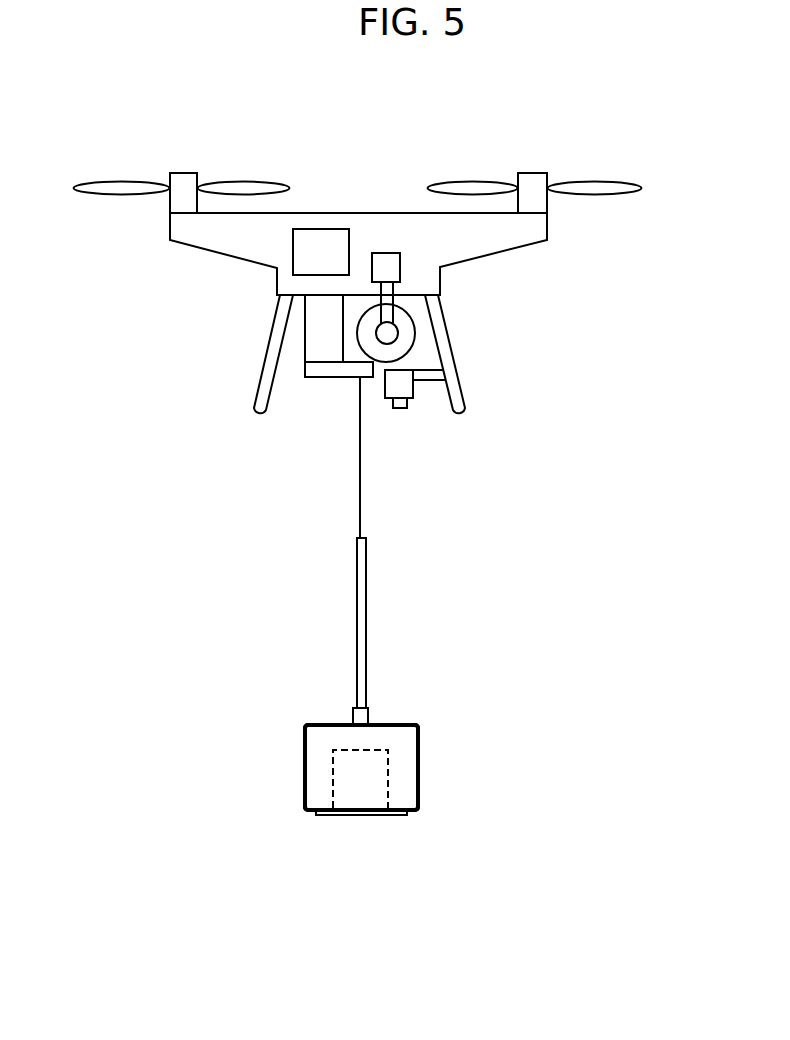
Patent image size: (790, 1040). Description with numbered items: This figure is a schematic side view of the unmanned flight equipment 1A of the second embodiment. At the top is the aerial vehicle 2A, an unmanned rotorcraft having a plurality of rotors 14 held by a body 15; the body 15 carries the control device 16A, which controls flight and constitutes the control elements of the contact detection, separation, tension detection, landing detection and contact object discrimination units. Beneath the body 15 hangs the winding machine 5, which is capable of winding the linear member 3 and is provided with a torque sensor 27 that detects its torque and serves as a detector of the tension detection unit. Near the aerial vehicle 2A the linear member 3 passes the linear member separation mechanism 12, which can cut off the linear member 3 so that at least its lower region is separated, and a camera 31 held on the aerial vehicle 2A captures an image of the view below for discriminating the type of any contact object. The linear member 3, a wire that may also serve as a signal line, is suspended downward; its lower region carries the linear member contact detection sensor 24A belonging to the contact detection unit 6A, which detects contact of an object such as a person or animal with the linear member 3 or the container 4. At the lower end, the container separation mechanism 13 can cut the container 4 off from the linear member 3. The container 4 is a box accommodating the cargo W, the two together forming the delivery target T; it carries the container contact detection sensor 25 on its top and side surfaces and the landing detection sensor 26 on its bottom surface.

The unmanned flight equipment 1A is at (623, 168).
The aerial vehicle 2A is at (408, 185).
The rotors 14 is at (236, 180).
The body 15 is at (371, 213).
The control device 16A is at (322, 229).
The torque sensor 27 is at (400, 268).
The winding machine 5 is at (415, 335).
The linear member separation mechanism 12 is at (338, 378).
The camera 31 is at (400, 408).
The linear member 3 is at (360, 483).
The contact detection unit 6A is at (388, 587).
The linear member contact detection sensor 24A is at (366, 603).
The delivery target T is at (415, 708).
The container separation mechanism 13 is at (353, 716).
The container 4 is at (383, 723).
The container contact detection sensor 25 is at (418, 738).
The cargo W is at (388, 785).
The landing detection sensor 26 is at (360, 816).